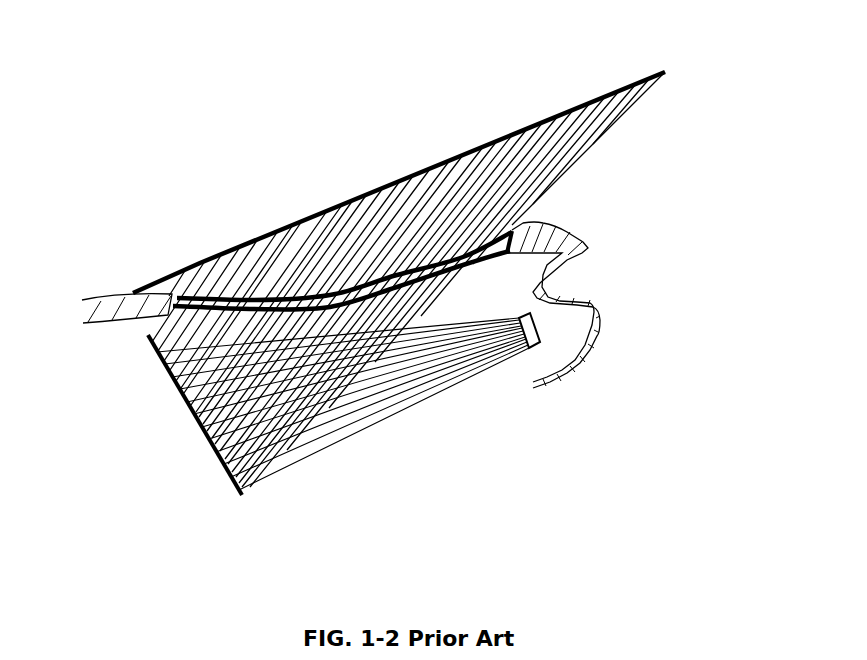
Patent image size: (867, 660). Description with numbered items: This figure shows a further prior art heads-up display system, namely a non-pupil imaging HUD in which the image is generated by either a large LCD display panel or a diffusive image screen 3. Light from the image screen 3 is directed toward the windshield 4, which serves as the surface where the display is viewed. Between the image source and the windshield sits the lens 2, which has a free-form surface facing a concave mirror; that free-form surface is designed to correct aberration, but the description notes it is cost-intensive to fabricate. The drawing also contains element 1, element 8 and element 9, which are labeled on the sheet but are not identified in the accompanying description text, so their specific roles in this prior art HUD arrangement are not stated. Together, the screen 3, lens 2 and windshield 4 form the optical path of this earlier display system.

The lower wing skin edge 1 is at (153, 337).
The lens 2 is at (513, 213).
The diffusive image screen 3 is at (526, 349).
The windshield 4 is at (667, 78).
The sealing lip 8 is at (586, 247).
The wing structure 9 is at (578, 156).